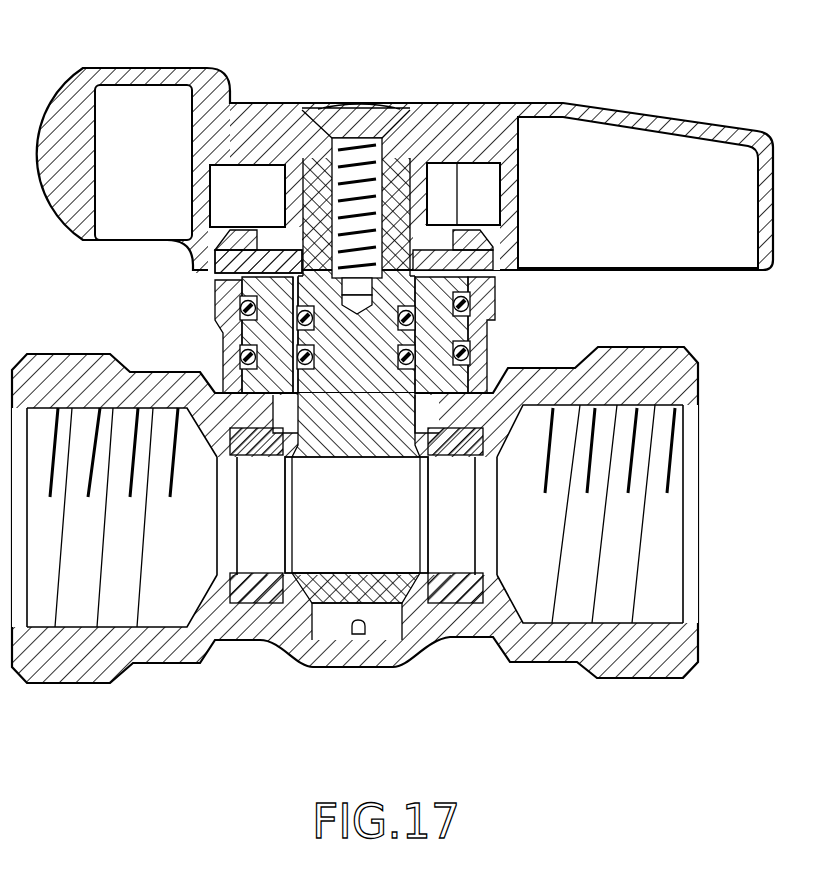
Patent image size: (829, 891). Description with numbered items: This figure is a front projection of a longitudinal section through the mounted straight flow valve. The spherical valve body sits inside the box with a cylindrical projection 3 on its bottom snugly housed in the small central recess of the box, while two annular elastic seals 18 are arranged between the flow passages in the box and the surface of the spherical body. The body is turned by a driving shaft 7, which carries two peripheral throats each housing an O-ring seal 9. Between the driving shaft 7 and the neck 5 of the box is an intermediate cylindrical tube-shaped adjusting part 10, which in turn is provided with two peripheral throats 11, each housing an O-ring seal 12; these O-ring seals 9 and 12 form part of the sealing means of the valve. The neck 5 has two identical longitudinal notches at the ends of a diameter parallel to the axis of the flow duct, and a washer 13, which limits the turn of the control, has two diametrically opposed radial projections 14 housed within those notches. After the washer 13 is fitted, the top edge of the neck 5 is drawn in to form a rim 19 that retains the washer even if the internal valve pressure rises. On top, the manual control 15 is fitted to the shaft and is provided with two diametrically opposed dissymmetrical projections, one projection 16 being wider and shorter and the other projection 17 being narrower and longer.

The cylindrical projection 3 is at (340, 626).
The neck 5 is at (218, 292).
The driving shaft 7 is at (398, 166).
The O-ring seal 9 is at (414, 315).
The intermediate cylindrical tube-shaped adjusting part 10 is at (467, 371).
The peripheral throat 11 is at (243, 313).
The O-ring seal 12 is at (240, 308).
The washer 13 is at (243, 260).
The radial projection 14 is at (258, 261).
The manual control 15 is at (475, 118).
The wider and shorter projection 16 is at (135, 112).
The narrower and longer projection 17 is at (725, 187).
The annular elastic seal 18 is at (240, 602).
The rim 19 is at (238, 240).